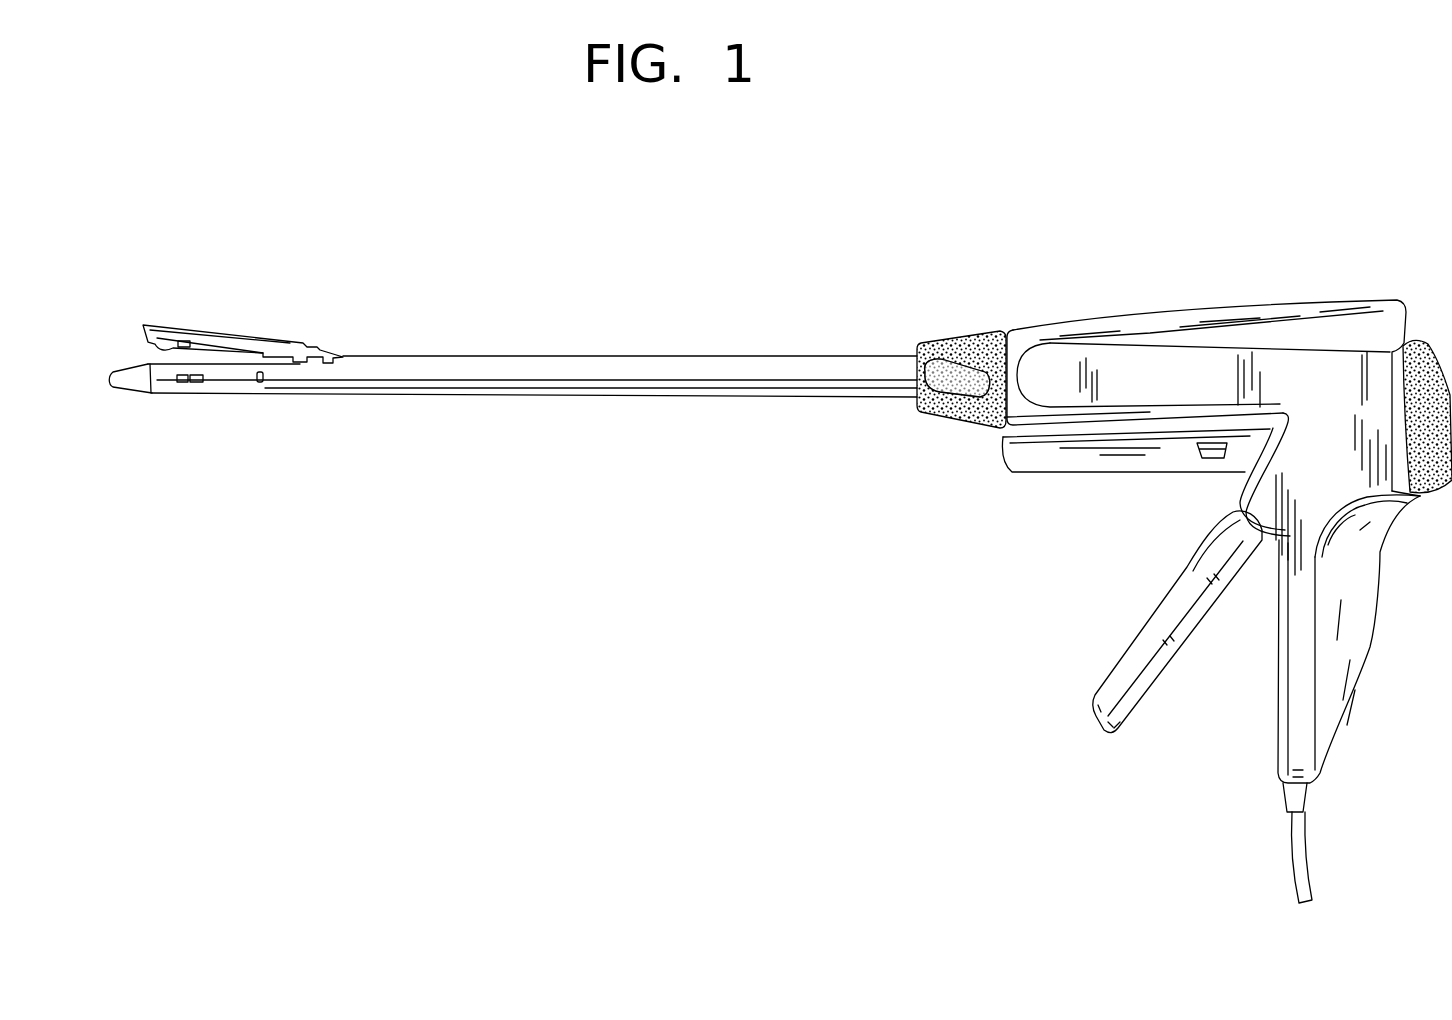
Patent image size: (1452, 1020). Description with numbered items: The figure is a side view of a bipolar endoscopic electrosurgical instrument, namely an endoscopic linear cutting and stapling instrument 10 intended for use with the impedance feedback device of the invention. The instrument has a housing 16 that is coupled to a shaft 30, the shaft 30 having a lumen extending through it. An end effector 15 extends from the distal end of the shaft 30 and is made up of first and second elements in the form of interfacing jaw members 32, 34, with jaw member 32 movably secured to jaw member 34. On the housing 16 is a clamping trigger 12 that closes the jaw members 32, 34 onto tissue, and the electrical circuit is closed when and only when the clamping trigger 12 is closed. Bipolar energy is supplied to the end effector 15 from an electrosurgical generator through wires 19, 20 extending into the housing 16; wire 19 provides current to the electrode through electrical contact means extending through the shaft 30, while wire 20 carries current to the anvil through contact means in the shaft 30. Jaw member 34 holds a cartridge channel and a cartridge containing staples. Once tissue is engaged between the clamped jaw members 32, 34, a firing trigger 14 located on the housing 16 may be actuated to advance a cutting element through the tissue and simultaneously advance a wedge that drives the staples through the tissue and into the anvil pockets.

The endoscopic linear cutting and stapling instrument 10 is at (497, 595).
The clamping trigger 12 is at (1103, 682).
The firing trigger 14 is at (1083, 470).
The end effector 15 is at (132, 317).
The housing 16 is at (1320, 300).
The wire 19 is at (1292, 857).
The wire 20 is at (1300, 862).
The shaft 30 is at (704, 353).
The jaw member 32 is at (245, 333).
The jaw member 34 is at (205, 398).